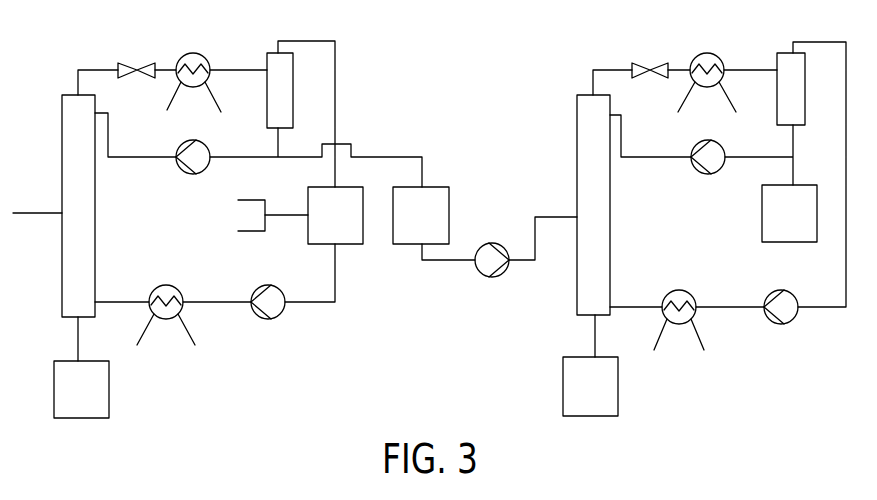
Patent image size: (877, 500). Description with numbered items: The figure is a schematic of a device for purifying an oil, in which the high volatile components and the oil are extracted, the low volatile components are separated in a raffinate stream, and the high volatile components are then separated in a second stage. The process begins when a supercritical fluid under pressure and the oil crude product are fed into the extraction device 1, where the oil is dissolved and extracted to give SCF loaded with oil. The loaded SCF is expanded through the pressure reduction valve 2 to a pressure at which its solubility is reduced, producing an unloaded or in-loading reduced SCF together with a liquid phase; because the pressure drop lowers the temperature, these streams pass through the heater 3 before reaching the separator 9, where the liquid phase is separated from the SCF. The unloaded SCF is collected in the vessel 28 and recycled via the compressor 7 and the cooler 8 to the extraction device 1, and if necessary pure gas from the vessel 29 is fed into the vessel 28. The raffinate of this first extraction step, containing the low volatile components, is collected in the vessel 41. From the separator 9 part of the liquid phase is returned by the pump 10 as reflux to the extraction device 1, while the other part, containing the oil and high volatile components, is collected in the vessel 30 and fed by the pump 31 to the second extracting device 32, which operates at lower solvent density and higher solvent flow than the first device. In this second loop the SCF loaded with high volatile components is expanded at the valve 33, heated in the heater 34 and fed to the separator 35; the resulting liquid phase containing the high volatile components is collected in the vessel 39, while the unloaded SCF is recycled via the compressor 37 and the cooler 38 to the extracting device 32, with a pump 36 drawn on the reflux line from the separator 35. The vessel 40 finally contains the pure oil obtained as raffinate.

The extraction device 1 is at (72, 195).
The pressure reduction valve 2 is at (137, 64).
The heater 3 is at (194, 53).
The compressor 7 is at (258, 316).
The cooler 8 is at (169, 285).
The separator 9 is at (267, 89).
The pump 10 is at (199, 174).
The vessel 28 is at (324, 226).
The vessel 29 is at (245, 232).
The vessel 30 is at (410, 226).
The pump 31 is at (484, 276).
The second extracting device 32 is at (583, 224).
The expansion valve 33 is at (650, 64).
The heater 34 is at (709, 53).
The separator 35 is at (777, 106).
The pump 36 is at (716, 174).
The compressor 37 is at (789, 291).
The cooler 38 is at (684, 291).
The vessel 39 is at (779, 224).
The vessel 40 is at (579, 398).
The vessel 41 is at (70, 401).